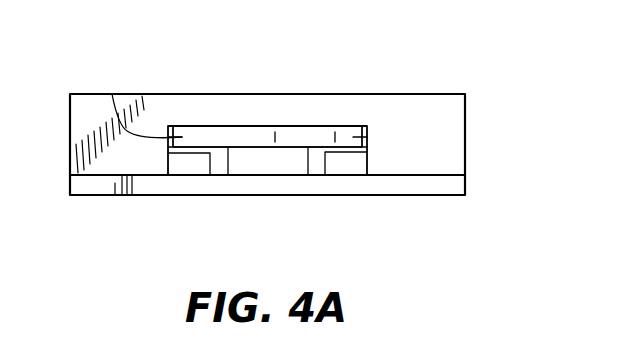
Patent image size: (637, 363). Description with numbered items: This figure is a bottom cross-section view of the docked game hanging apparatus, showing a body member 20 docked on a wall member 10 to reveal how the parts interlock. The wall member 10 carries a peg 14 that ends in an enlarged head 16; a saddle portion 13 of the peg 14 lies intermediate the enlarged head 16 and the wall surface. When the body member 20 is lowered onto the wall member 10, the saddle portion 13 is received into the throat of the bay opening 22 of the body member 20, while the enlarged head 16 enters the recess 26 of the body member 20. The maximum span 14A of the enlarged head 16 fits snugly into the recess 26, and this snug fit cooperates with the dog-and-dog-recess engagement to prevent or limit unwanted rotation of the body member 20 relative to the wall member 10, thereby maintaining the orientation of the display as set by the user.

The wall member 10 is at (430, 183).
The saddle portion 13 is at (255, 160).
The peg 14 is at (255, 135).
The maximum span 14A is at (190, 136).
The enlarged head 16 is at (292, 135).
The body member 20 is at (427, 114).
The bay opening 22 is at (178, 137).
The recess 26 is at (112, 94).